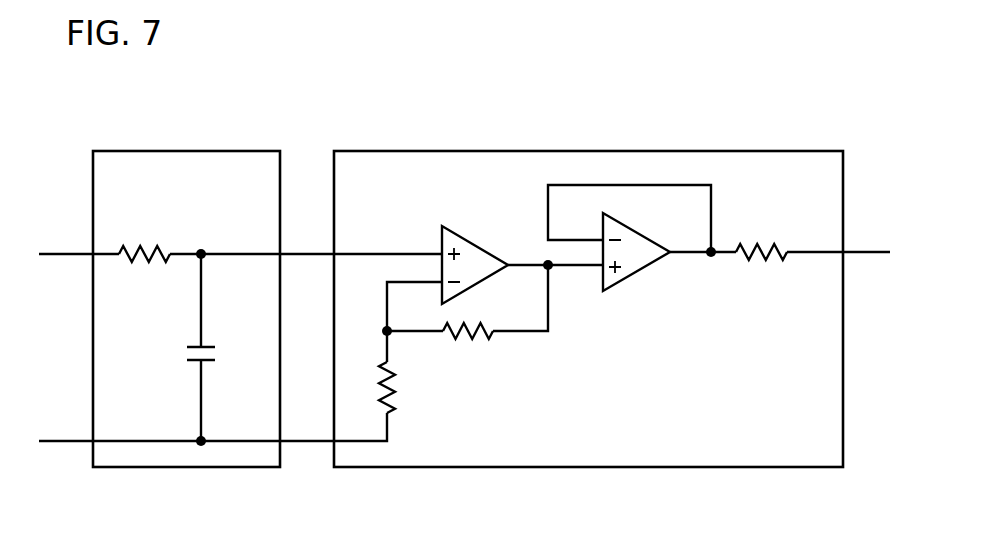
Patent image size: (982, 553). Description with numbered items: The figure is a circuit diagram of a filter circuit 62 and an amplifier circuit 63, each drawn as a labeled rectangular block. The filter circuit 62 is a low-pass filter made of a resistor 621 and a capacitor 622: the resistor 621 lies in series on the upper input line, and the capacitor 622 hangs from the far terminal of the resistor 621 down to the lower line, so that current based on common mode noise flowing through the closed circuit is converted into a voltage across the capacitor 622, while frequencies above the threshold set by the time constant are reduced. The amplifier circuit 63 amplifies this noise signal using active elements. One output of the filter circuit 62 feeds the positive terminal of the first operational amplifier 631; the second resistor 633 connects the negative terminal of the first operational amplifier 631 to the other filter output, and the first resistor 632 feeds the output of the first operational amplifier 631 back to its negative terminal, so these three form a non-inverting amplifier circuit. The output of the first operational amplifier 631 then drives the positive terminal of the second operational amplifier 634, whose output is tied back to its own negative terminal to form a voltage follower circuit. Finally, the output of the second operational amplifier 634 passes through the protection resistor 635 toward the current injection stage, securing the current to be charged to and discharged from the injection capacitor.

The filter circuit 62 is at (110, 147).
The amplifier circuit 63 is at (370, 148).
The resistor 621 is at (143, 244).
The capacitor 622 is at (191, 364).
The first operational amplifier 631 is at (455, 226).
The first resistor 632 is at (478, 348).
The second resistor 633 is at (397, 400).
The second operational amplifier 634 is at (631, 284).
The protection resistor 635 is at (758, 240).